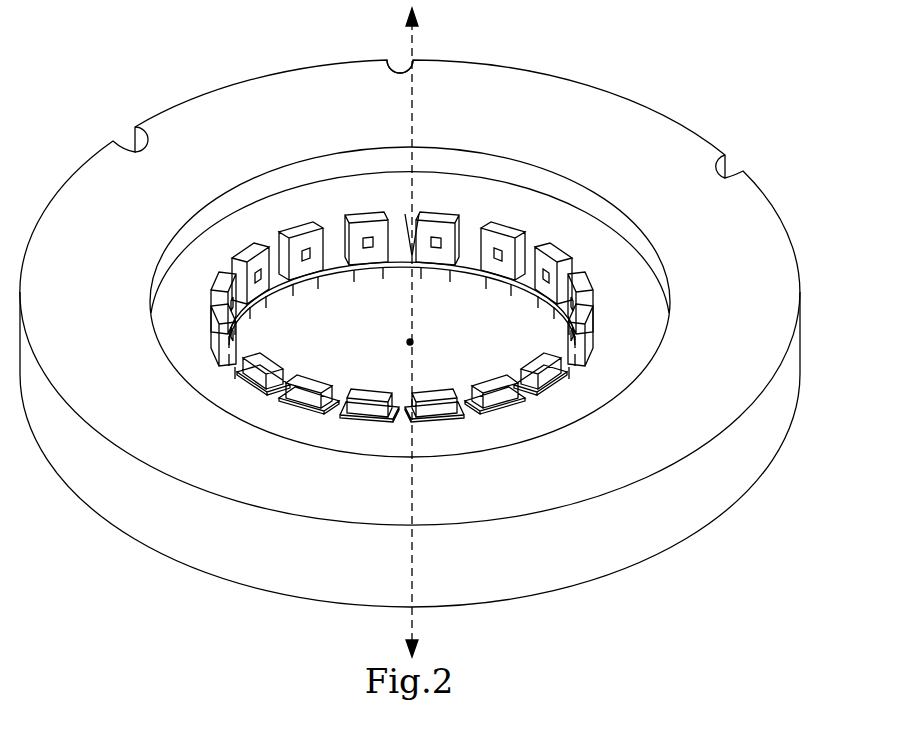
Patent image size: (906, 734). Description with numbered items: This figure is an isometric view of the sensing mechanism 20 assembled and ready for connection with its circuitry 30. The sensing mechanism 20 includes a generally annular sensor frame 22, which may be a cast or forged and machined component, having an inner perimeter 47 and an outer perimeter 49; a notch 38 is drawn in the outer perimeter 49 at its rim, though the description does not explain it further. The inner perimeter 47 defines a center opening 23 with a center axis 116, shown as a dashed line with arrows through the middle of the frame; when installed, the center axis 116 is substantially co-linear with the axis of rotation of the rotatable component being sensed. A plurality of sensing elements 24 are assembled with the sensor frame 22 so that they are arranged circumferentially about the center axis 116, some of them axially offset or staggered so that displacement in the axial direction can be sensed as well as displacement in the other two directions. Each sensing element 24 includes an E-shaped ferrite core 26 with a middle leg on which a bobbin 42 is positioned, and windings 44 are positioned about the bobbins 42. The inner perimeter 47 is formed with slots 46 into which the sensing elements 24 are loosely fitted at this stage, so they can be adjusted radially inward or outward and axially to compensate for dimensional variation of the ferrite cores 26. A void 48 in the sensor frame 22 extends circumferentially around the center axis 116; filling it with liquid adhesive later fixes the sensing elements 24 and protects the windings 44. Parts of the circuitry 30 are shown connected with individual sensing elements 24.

The sensing mechanism 20 is at (746, 516).
The sensor frame 22 is at (632, 548).
The center opening 23 is at (362, 368).
The sensing elements 24 is at (503, 212).
The ferrite core 26 is at (520, 242).
The circuitry 30 is at (338, 290).
The locating notch 38 is at (730, 176).
The bobbins 42 is at (500, 272).
The windings 44 is at (490, 224).
The slots 46 is at (228, 293).
The inner perimeter 47 is at (268, 385).
The void 48 is at (633, 365).
The outer perimeter 49 is at (118, 497).
The center axis 116 is at (413, 76).